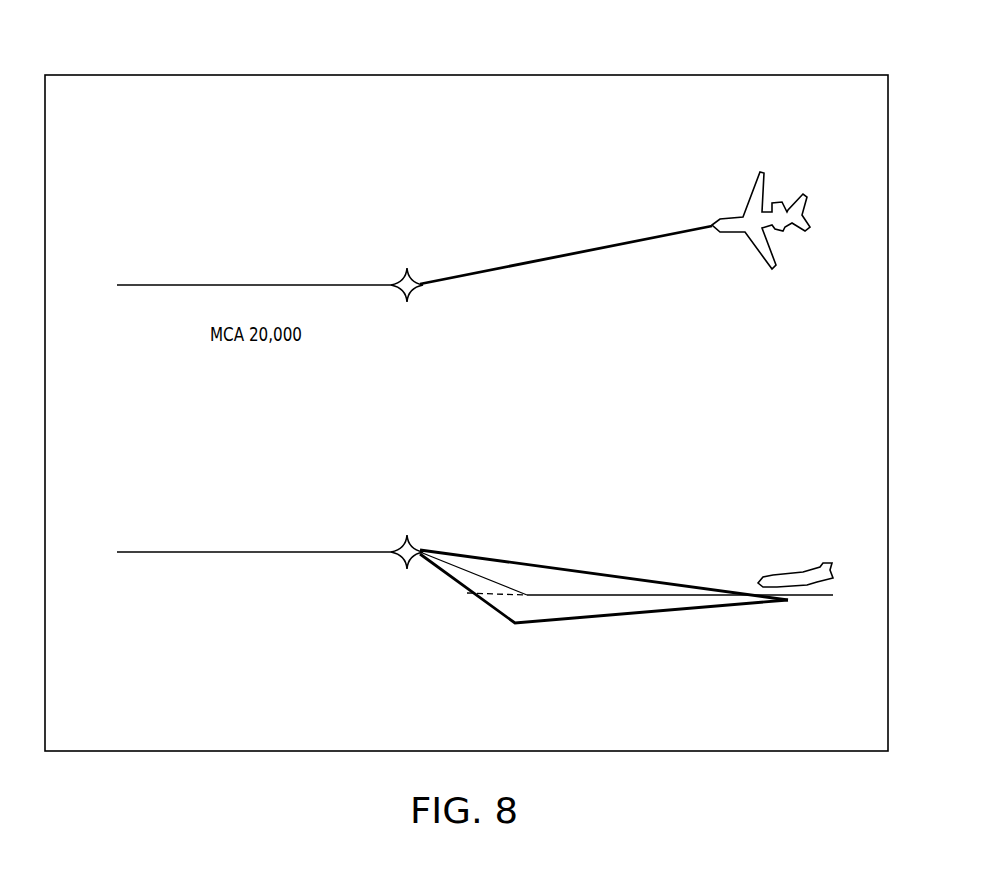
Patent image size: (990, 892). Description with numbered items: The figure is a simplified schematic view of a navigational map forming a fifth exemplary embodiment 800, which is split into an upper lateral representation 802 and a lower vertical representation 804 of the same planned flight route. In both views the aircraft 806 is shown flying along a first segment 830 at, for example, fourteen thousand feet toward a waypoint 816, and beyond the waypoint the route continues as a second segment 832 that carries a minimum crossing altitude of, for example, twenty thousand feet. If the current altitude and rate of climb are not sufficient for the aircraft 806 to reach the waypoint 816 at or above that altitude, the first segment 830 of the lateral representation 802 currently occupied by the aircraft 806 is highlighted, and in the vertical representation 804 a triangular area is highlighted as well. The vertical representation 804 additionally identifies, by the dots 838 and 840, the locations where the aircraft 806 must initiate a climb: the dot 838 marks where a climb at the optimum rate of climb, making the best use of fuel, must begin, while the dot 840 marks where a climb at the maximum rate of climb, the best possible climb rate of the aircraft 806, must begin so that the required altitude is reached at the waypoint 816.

The fifth exemplary embodiment 800 is at (829, 75).
The lateral representation 802 is at (848, 202).
The vertical representation 804 is at (850, 532).
The aircraft 806 is at (762, 172).
The waypoint 816 is at (407, 268).
The first segment 830 is at (520, 263).
The second segment 832 is at (258, 284).
The dot 838 is at (527, 598).
The dot 840 is at (467, 593).